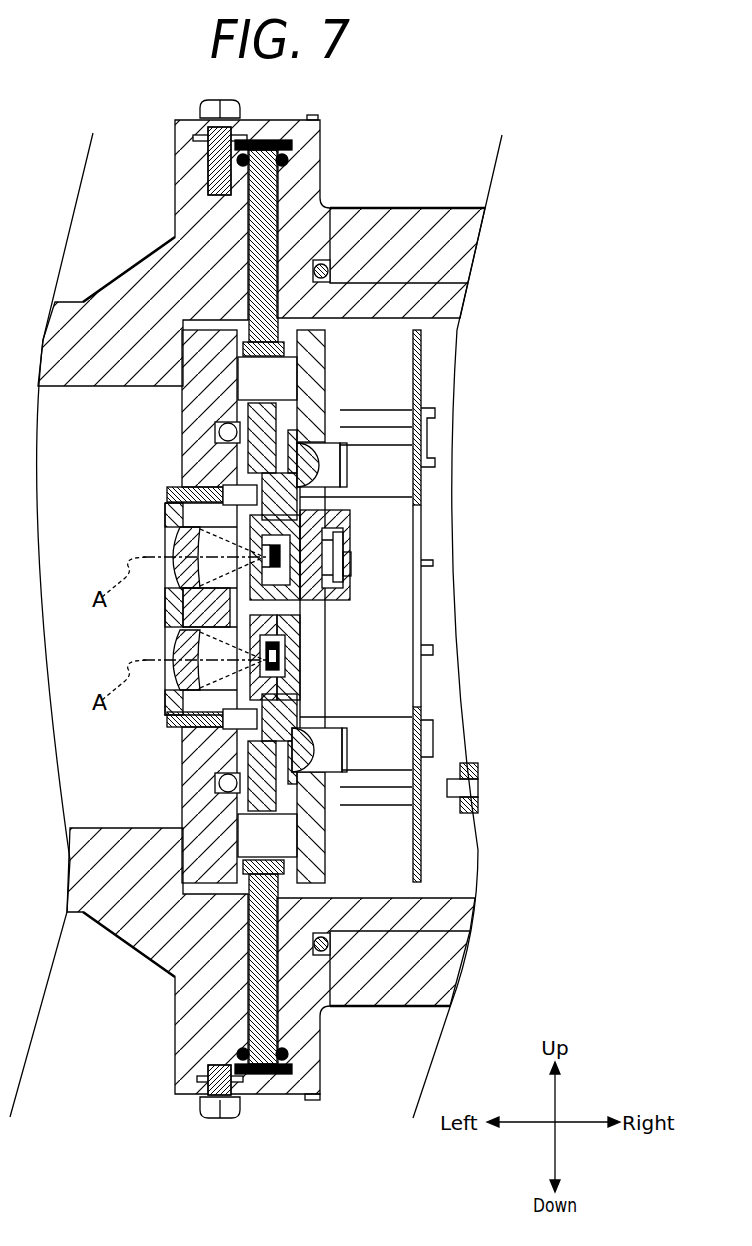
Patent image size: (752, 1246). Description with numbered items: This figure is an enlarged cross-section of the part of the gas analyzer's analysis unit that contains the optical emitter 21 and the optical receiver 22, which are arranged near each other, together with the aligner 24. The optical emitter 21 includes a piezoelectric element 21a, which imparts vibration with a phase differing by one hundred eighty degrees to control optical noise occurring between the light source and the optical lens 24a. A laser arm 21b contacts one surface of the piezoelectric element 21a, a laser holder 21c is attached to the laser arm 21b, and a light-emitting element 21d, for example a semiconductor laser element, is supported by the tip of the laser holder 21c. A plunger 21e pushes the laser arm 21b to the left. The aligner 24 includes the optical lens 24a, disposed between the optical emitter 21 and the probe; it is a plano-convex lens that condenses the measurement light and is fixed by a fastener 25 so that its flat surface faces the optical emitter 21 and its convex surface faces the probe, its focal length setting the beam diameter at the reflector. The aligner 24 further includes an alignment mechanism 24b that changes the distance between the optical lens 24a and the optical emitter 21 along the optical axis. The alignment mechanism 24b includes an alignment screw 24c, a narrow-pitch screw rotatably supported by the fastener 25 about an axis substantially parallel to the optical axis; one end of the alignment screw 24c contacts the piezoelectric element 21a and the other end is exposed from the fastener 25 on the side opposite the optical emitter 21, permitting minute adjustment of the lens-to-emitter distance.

The optical emitter 21 is at (431, 606).
The piezoelectric element 21a is at (340, 500).
The laser arm 21b is at (350, 512).
The laser holder 21c is at (350, 527).
The light-emitting element 21d is at (348, 566).
The plunger 21e is at (340, 474).
The optical receiver 22 is at (284, 667).
The aligner 24 is at (152, 591).
The optical lens 24a is at (172, 540).
The alignment mechanism 24b is at (167, 496).
The alignment screw 24c is at (88, 557).
The fastener 25 is at (185, 612).